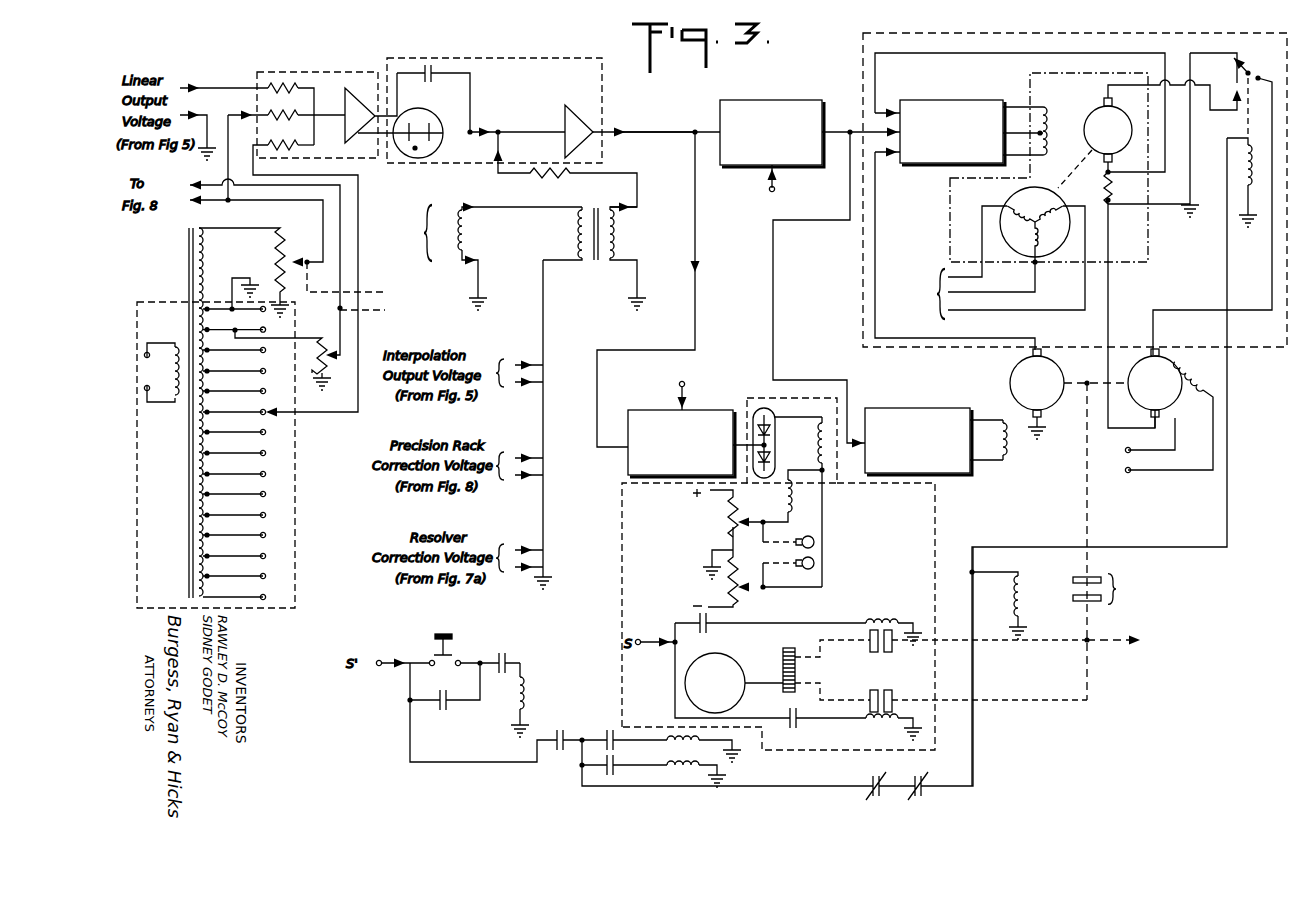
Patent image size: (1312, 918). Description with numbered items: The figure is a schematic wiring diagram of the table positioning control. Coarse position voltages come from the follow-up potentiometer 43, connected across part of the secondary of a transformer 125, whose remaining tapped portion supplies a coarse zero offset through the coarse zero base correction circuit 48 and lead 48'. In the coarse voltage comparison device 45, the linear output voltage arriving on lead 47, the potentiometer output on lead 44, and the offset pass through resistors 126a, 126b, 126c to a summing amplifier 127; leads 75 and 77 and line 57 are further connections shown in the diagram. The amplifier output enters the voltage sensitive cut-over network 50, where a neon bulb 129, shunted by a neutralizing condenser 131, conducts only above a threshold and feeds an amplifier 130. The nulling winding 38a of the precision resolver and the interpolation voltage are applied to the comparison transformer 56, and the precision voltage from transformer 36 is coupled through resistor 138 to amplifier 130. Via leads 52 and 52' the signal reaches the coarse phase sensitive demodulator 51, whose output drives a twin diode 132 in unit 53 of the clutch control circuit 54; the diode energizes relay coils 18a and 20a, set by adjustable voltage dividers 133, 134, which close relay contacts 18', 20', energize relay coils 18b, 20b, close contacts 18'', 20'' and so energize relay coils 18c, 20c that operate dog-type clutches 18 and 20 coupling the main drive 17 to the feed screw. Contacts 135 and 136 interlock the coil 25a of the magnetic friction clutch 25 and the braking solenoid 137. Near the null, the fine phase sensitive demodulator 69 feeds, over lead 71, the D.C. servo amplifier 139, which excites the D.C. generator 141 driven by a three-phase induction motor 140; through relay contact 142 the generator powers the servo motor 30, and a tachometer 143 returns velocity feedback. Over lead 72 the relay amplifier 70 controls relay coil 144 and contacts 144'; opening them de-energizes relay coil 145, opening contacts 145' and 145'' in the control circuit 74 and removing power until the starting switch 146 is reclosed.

The lead 47 is at (210, 91).
The resistor 126a is at (285, 87).
The resistor 126b is at (286, 108).
The resistor 126c is at (305, 272).
The summing amplifier 127 is at (344, 108).
The coarse voltage comparison device 45 is at (341, 72).
The lead 44 is at (231, 152).
The line to Fig. 8 75 is at (204, 184).
The line to Fig. 8 77 is at (208, 205).
The follow-up potentiometer 43 is at (285, 240).
The transformer 36 is at (332, 340).
The lead 48' is at (367, 328).
The coarse zero base correction circuit 48 is at (216, 418).
The transformer 125 is at (157, 372).
The voltage sensitive cut-over network 50 is at (537, 60).
The neutralizing condenser 131 is at (431, 82).
The neon bulb 129 is at (438, 147).
The amplifier 130 is at (562, 110).
The resistor 138 is at (533, 179).
The lead 52 is at (671, 121).
The nulling winding 38a is at (463, 238).
The comparison transformer 56 is at (613, 237).
The summing line 57 is at (544, 316).
The fine phase sensitive demodulator 69 is at (778, 100).
The lead 71 is at (840, 130).
The lead 52' is at (662, 289).
The lead 72 is at (773, 274).
The D.C. servo amplifier 139 is at (948, 100).
The D.C. generator 141 is at (1098, 112).
The relay contact 142 is at (1250, 71).
The braking solenoid 137 is at (1244, 193).
The three-phase induction motor 140 is at (1042, 186).
The tachometer 143 is at (1060, 382).
The servo motor 30 is at (1179, 371).
The relay amplifier 70 is at (914, 407).
The relay coil 144 is at (1008, 445).
The rectifier unit 53 is at (745, 409).
The twin diode 132 is at (776, 445).
The relay coil 20a is at (818, 453).
The relay coil 18a is at (783, 496).
The adjustable voltage divider 133 is at (726, 523).
The adjustable voltage divider 134 is at (726, 594).
The coarse phase sensitive demodulator 51 is at (628, 464).
The clutch control circuit 54 is at (917, 541).
The coil 25a is at (1024, 614).
The magnetic friction clutch 25 is at (1105, 589).
The starting switch 146 is at (435, 635).
The contacts 144' is at (504, 646).
The relay coil 145 is at (538, 697).
The contacts 145' is at (443, 695).
The contacts 145'' is at (565, 722).
The control circuit 74 is at (392, 717).
The relay contacts 20' is at (624, 728).
The relay contacts 18' is at (623, 762).
The relay coil 20b is at (669, 747).
The relay coil 18b is at (669, 770).
The relay contacts 18'' is at (718, 631).
The relay coil 18c is at (864, 623).
The dog-type clutch 18 is at (941, 647).
The main drive 17 is at (764, 670).
The relay contacts 20'' is at (811, 710).
The dog-type clutch 20 is at (941, 694).
The relay coil 20c is at (870, 723).
The contacts 135 is at (874, 777).
The contacts 136 is at (918, 776).